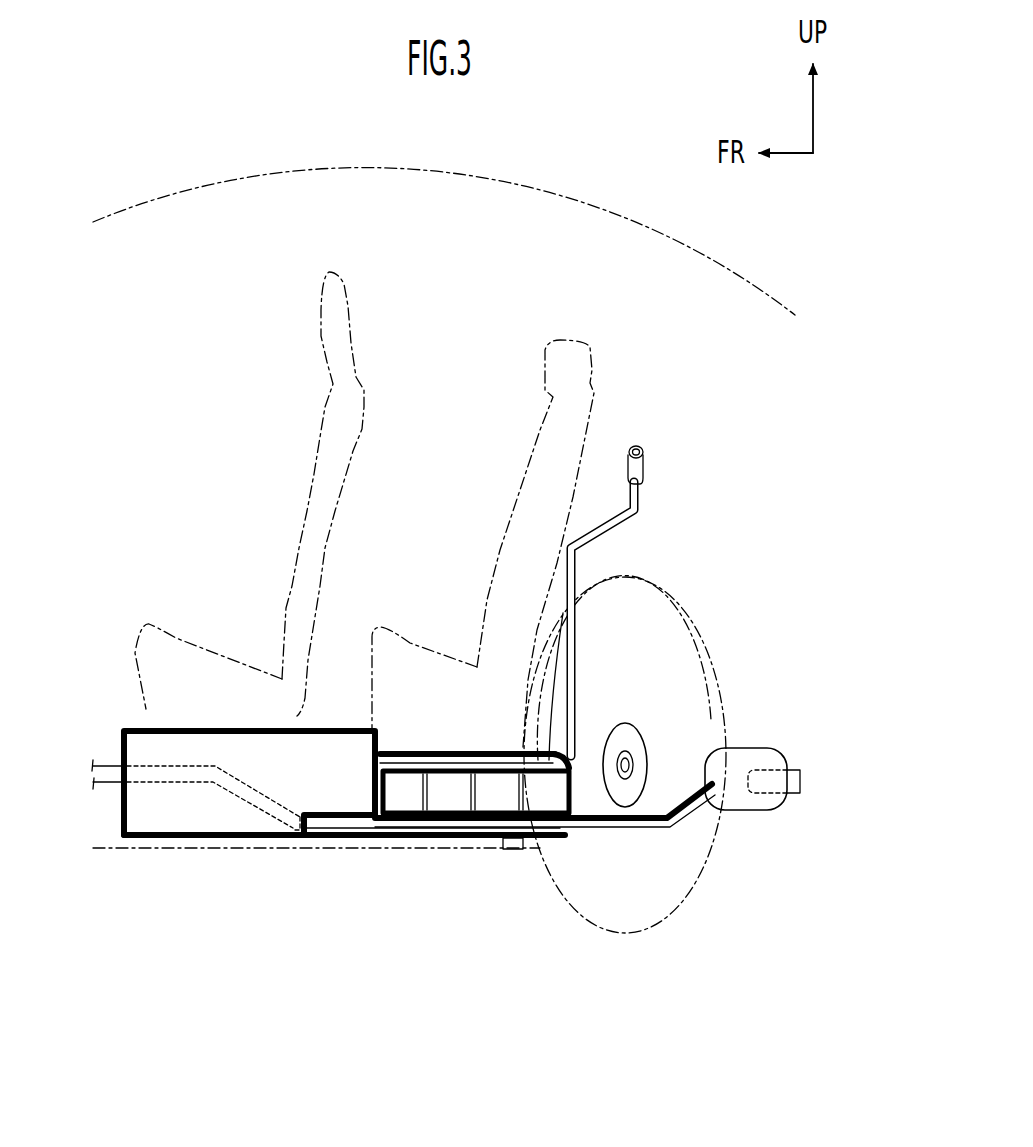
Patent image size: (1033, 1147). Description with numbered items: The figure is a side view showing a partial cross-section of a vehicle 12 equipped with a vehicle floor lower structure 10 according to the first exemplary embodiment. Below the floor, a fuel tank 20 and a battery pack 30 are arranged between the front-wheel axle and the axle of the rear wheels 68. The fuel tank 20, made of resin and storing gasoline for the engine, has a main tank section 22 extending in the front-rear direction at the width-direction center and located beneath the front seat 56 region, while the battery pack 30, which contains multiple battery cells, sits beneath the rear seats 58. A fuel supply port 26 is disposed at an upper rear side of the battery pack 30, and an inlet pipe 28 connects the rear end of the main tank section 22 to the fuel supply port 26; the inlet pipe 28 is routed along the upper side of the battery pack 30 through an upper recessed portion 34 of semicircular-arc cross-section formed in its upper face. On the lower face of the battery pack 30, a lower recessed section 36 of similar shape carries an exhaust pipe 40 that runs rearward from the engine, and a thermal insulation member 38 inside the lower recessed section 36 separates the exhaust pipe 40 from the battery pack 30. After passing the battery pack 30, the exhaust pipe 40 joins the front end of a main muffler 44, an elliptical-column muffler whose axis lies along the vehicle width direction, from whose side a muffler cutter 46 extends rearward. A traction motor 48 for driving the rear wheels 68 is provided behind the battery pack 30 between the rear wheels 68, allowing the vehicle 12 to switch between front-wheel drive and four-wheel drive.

The vehicle floor lower structure 10 is at (139, 886).
The vehicle 12 is at (450, 166).
The fuel tank 20 is at (224, 794).
The main tank section 22 is at (210, 841).
The fuel supply port 26 is at (645, 466).
The inlet pipe 28 is at (592, 527).
The battery pack 30 is at (574, 763).
The upper recessed portion 34 is at (438, 750).
The lower recessed section 36 is at (503, 840).
The thermal insulation member 38 is at (440, 822).
The exhaust pipe 40 is at (335, 832).
The main muffler 44 is at (745, 754).
The muffler cutter 46 is at (793, 802).
The traction motor 48 is at (631, 727).
The front seat 56 is at (322, 310).
The rear seats 58 is at (545, 356).
The rear wheels 68 is at (650, 935).